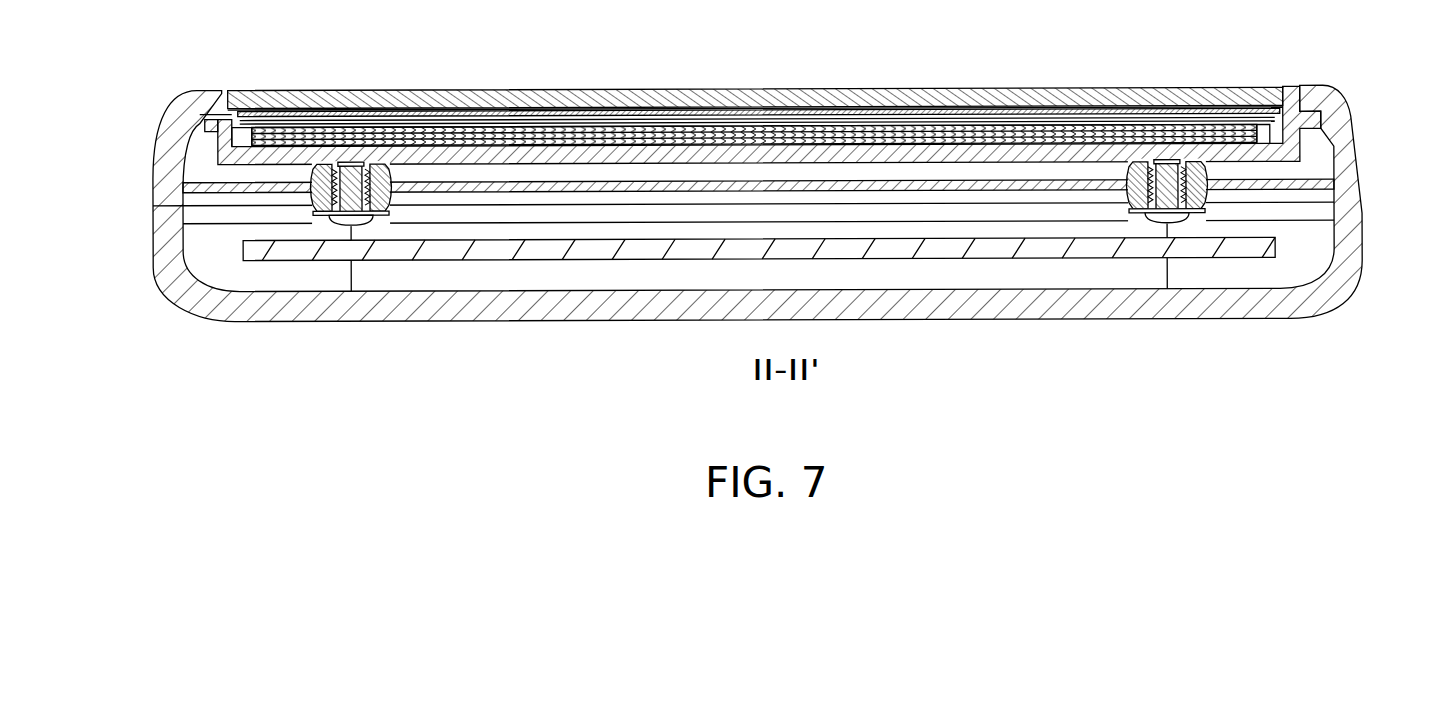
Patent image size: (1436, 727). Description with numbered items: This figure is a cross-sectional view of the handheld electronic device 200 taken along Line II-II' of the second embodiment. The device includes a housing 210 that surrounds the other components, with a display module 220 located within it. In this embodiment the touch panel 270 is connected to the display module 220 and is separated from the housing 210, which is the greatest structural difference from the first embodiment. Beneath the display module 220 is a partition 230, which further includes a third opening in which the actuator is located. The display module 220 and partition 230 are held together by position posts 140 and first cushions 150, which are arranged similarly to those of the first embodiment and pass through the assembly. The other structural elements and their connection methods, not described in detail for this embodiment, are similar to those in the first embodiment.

The handheld electronic device 200 is at (788, 202).
The housing 210 is at (1347, 118).
The display module 220 is at (1290, 93).
The partition 230 is at (1318, 182).
The touch panel 270 is at (1133, 97).
The position posts 140 is at (1180, 205).
The first cushions 150 is at (1203, 200).